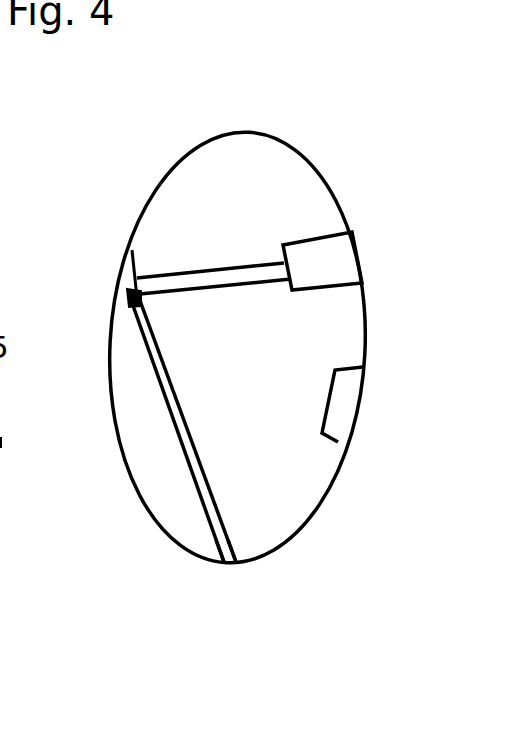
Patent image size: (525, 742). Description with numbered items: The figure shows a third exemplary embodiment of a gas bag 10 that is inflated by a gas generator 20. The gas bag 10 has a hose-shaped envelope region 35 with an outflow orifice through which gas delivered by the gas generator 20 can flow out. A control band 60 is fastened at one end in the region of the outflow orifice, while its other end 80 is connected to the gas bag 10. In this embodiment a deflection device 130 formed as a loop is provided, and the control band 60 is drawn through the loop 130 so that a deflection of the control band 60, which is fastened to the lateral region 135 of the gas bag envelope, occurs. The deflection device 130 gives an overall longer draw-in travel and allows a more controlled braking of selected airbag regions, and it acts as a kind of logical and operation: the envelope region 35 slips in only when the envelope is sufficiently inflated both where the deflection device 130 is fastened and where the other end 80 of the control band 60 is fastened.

The gas bag 10 is at (213, 137).
The control band 60 is at (233, 272).
The deflection device 130 is at (129, 266).
The envelope region 35 is at (337, 258).
The gas generator 20 is at (348, 410).
The lateral region 135 is at (187, 557).
The other end 80 is at (225, 565).